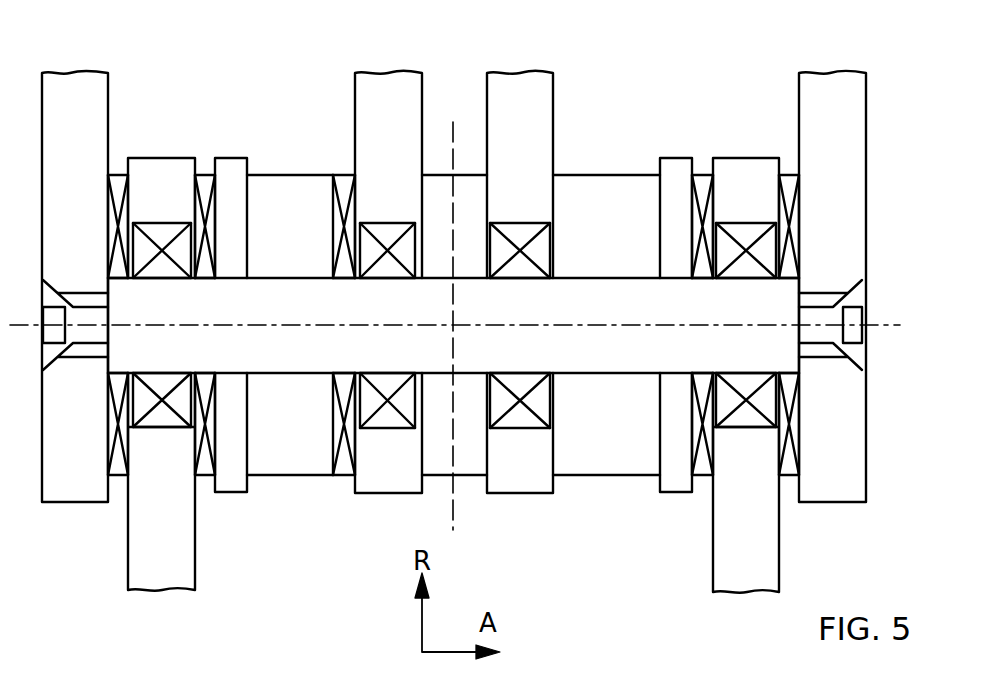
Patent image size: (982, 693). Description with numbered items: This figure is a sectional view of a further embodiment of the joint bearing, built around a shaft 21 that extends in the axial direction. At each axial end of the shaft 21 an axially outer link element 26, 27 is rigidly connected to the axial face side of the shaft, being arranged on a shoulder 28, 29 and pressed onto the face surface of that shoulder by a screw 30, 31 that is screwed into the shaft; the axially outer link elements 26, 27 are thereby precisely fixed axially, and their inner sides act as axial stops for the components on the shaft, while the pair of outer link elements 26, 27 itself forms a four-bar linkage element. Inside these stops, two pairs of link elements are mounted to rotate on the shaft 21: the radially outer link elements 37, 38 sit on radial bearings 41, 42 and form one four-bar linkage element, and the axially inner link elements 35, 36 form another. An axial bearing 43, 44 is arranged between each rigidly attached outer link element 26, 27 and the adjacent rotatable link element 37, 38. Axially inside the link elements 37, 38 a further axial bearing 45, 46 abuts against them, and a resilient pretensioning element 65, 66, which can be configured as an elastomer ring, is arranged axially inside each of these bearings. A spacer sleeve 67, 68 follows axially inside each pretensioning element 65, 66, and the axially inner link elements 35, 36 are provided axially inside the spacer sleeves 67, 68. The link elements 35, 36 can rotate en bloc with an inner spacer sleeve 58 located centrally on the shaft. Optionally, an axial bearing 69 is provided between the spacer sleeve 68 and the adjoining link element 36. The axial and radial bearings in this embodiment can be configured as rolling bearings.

The shaft 21 is at (613, 363).
The axially outer link element 26 is at (848, 95).
The axially outer link element 27 is at (60, 80).
The shoulder 28 is at (803, 284).
The shoulder 29 is at (107, 292).
The screw 30 is at (818, 330).
The screw 31 is at (90, 330).
The axially inner link element 35 is at (520, 88).
The axially inner link element 36 is at (392, 88).
The radially outer link element 37 is at (750, 578).
The radially outer link element 38 is at (158, 578).
The radial bearing 41 is at (743, 420).
The radial bearing 42 is at (163, 420).
The axial bearing 43 is at (788, 183).
The axial bearing 44 is at (119, 183).
The axial bearing 45 is at (702, 183).
The axial bearing 46 is at (204, 183).
The inner spacer sleeve 58 is at (443, 183).
The resilient pretensioning element 65 is at (677, 167).
The resilient pretensioning element 66 is at (232, 167).
The spacer sleeve 67 is at (605, 183).
The spacer sleeve 68 is at (280, 183).
The axial bearing 69 is at (345, 185).